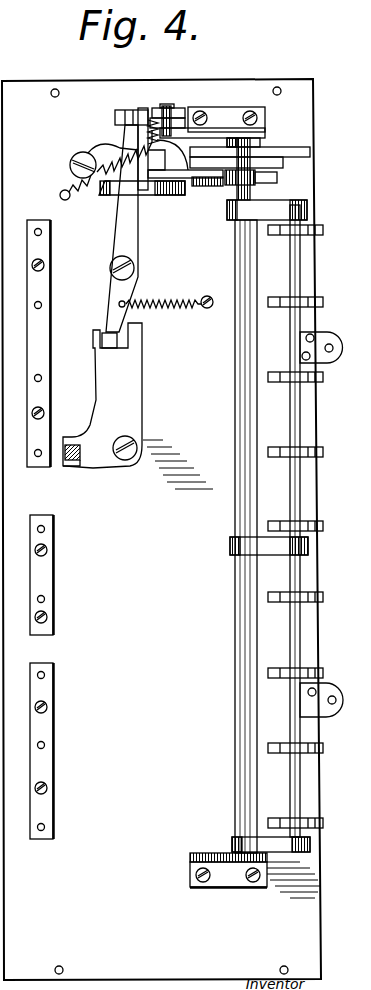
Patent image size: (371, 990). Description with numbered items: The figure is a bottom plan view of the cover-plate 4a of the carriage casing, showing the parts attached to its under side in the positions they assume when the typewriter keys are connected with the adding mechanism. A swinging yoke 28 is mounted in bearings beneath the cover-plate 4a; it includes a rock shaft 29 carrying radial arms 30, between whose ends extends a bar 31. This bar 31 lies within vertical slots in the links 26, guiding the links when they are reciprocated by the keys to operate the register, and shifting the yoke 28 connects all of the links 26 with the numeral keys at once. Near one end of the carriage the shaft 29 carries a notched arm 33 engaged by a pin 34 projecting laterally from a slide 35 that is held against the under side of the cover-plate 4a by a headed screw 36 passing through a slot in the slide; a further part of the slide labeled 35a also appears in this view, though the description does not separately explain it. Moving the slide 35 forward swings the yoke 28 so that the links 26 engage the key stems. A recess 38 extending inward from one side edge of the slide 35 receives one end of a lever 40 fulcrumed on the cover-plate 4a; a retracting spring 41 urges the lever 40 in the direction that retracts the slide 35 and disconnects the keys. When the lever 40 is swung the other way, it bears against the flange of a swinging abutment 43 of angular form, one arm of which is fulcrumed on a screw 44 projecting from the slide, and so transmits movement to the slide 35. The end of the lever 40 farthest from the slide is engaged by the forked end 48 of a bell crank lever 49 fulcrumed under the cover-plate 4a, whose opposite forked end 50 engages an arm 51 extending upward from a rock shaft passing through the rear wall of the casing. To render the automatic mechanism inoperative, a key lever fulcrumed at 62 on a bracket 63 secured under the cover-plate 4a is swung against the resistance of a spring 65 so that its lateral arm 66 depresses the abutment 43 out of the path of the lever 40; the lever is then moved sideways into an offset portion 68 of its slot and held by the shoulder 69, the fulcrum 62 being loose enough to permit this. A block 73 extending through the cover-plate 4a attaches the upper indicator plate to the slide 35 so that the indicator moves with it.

The links 26 is at (285, 236).
The swinging yoke 28 is at (300, 346).
The rock shaft 29 is at (240, 364).
The radial arms 30 is at (236, 222).
The bar 31 is at (296, 434).
The notched arm 33 is at (236, 186).
The pin 34 is at (277, 177).
The slide 35 is at (283, 163).
The pin 35a is at (166, 106).
The headed screw 36 is at (70, 165).
The recess 38 is at (146, 190).
The lever 40 is at (117, 231).
The retracting spring 41 is at (166, 289).
The swinging abutment 43 is at (113, 138).
The screw 44 is at (212, 186).
The forked end 48 is at (96, 338).
The bell crank lever 49 is at (118, 409).
The forked end 50 is at (77, 468).
The arm 51 is at (66, 458).
The fulcrum 62 is at (176, 113).
The bracket 63 is at (212, 133).
The spring 65 is at (68, 200).
The arm 66 is at (168, 104).
The offset portion 68 is at (123, 110).
The shoulder 69 is at (115, 114).
The block 73 is at (275, 148).
The cover-plate 4a is at (196, 466).